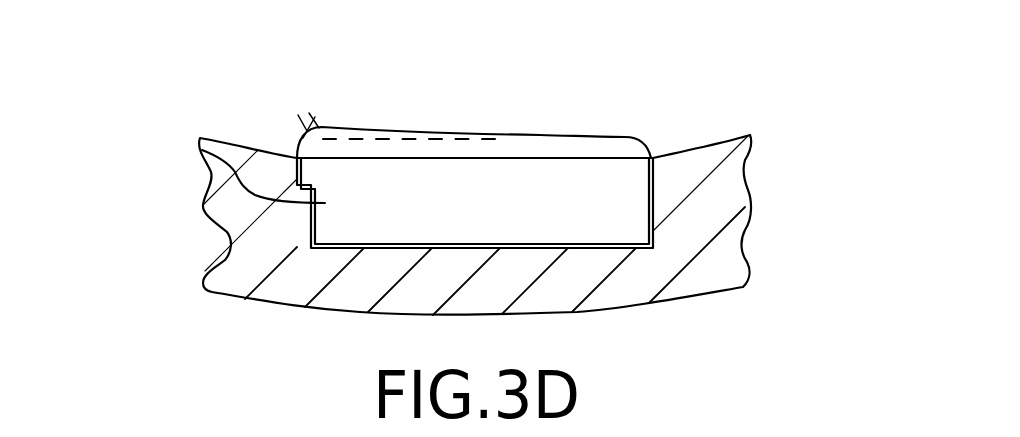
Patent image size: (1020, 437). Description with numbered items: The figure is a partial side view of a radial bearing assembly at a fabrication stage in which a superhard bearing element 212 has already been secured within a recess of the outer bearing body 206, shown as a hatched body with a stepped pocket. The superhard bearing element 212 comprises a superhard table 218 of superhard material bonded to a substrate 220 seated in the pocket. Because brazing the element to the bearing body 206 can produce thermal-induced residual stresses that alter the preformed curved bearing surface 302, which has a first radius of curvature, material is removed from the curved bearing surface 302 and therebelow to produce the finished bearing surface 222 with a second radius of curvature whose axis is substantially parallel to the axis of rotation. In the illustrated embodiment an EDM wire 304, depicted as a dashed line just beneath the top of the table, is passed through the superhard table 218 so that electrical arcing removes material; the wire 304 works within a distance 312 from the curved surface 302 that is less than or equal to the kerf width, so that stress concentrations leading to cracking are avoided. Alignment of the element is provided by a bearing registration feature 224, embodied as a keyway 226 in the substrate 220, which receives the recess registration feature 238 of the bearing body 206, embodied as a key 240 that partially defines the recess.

The outer bearing body 206 is at (710, 278).
The superhard bearing element 212 is at (767, 53).
The superhard table 218 is at (627, 150).
The substrate 220 is at (280, 150).
The bearing surface 222 is at (618, 137).
The bearing registration feature 224 is at (345, 225).
The keyway 226 is at (312, 220).
The recess registration feature 238 is at (266, 237).
The key 240 is at (308, 245).
The curved bearing surface 302 is at (462, 133).
The EDM wire 304 is at (511, 138).
The distance 312 is at (340, 94).